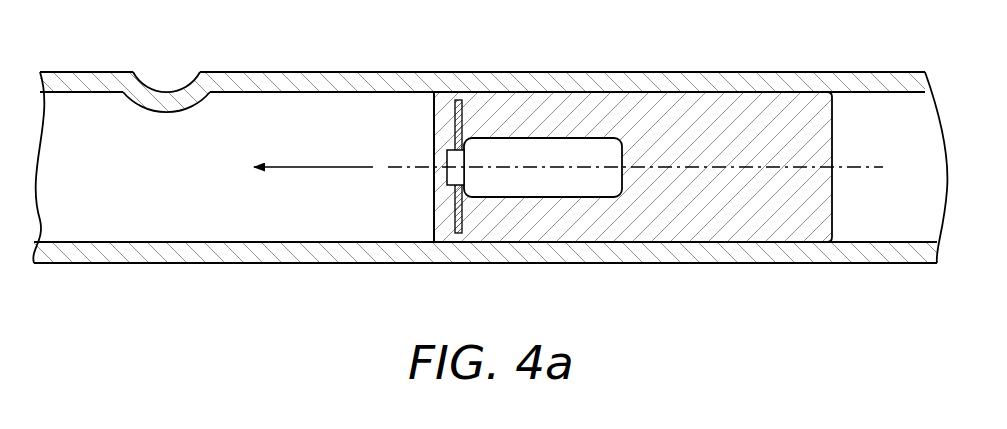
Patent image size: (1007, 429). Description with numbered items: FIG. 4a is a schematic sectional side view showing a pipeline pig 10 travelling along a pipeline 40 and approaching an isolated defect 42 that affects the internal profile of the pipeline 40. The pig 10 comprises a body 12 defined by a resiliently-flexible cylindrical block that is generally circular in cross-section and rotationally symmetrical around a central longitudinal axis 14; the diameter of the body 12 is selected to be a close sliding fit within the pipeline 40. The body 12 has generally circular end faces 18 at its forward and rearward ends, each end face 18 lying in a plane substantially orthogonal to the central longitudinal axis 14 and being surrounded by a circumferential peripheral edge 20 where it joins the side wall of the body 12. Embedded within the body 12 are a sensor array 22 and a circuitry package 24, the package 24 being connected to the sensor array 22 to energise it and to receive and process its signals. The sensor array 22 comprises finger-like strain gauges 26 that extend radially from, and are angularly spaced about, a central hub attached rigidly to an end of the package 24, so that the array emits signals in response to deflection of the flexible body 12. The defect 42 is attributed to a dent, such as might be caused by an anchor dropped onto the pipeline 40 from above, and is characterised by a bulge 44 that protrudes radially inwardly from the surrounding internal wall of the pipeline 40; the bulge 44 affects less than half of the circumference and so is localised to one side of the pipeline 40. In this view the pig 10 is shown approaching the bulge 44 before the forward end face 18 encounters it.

The pipeline pig 10 is at (873, 199).
The body 12 is at (700, 227).
The central longitudinal axis 14 is at (875, 167).
The end face 18 is at (433, 143).
The circumferential peripheral edge 20 is at (433, 92).
The sensor array 22 is at (413, 203).
The circuitry package 24 is at (542, 183).
The strain gauge 26 is at (458, 100).
The pipeline 40 is at (672, 72).
The isolated defect 42 is at (166, 92).
The bulge 44 is at (166, 112).